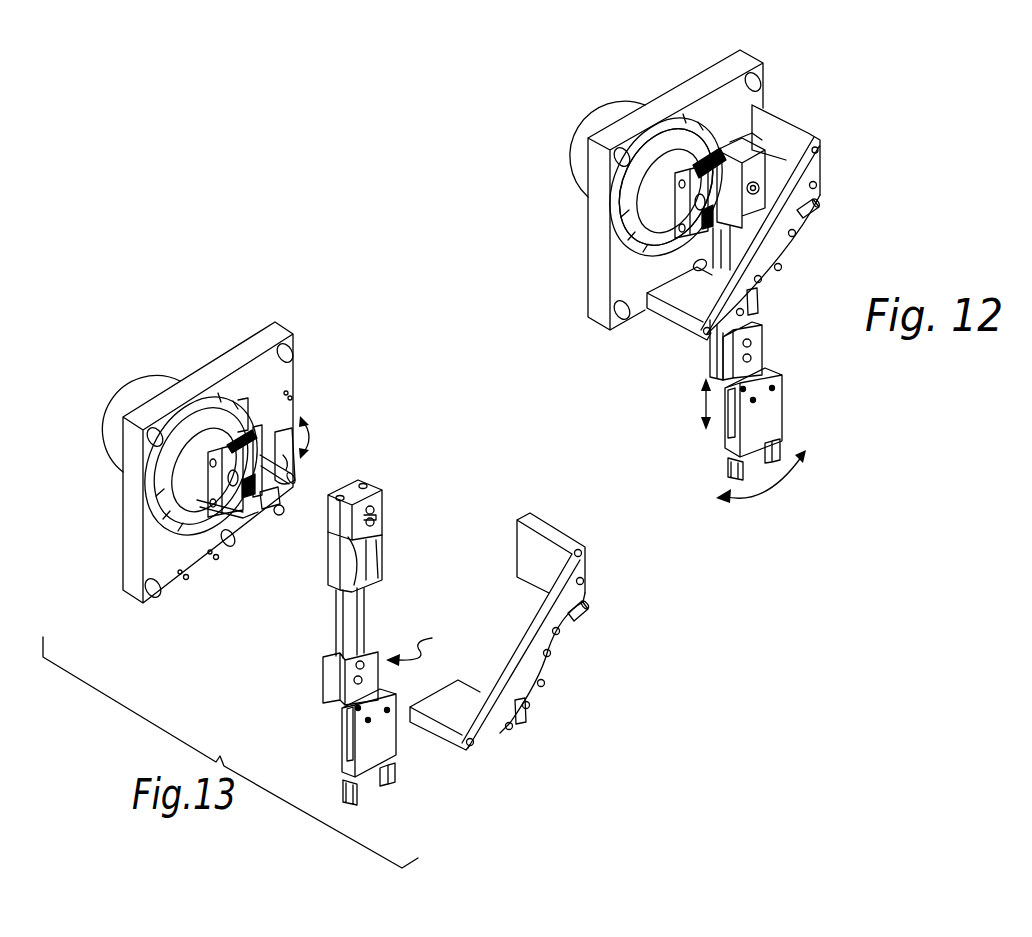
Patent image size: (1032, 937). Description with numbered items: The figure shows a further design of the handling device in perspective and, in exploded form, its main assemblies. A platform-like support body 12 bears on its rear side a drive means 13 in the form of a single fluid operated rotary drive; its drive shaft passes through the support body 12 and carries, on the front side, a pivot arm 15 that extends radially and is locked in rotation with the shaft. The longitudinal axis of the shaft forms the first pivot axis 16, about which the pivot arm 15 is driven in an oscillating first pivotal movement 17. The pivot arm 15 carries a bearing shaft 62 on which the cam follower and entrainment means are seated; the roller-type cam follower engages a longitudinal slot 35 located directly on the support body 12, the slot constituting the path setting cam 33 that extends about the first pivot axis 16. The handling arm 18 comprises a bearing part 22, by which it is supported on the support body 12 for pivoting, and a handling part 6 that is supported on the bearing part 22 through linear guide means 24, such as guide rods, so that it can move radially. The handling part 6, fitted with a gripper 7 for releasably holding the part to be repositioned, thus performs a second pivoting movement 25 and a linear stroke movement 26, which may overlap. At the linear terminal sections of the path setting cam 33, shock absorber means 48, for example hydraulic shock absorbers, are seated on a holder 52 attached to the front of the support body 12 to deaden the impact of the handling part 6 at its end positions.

In FIG. 12, the handling part 6 is at (760, 344).
In FIG. 13, the handling part 6 is at (377, 475).
In FIG. 12, the gripper 7 is at (772, 404).
In FIG. 13, the gripper 7 is at (392, 735).
In FIG. 12, the support body 12 is at (745, 62).
In FIG. 13, the support body 12 is at (232, 352).
In FIG. 12, the drive means 13 is at (580, 145).
In FIG. 13, the drive means 13 is at (141, 424).
In FIG. 12, the pivot arm 15 is at (706, 156).
In FIG. 13, the pivot arm 15 is at (295, 418).
In FIG. 12, the first pivot axis 16 is at (715, 222).
In FIG. 13, the first pivotal movement 17 is at (315, 440).
In FIG. 13, the handling arm 18 is at (290, 460).
In FIG. 12, the bearing part 22 is at (722, 247).
In FIG. 13, the bearing part 22 is at (332, 588).
In FIG. 13, the linear guide means 24 is at (345, 625).
In FIG. 12, the second pivoting movement 25 is at (778, 498).
In FIG. 12, the linear stroke movement 26 is at (701, 394).
In FIG. 12, the path setting cam 33 is at (626, 233).
In FIG. 13, the path setting cam 33 is at (152, 504).
In FIG. 12, the longitudinal slot 35 is at (621, 187).
In FIG. 12, the shock absorber means 48 is at (784, 256).
In FIG. 13, the shock absorber means 48 is at (596, 632).
In FIG. 13, the holder 52 is at (552, 663).
In FIG. 13, the bearing shaft 62 is at (290, 492).